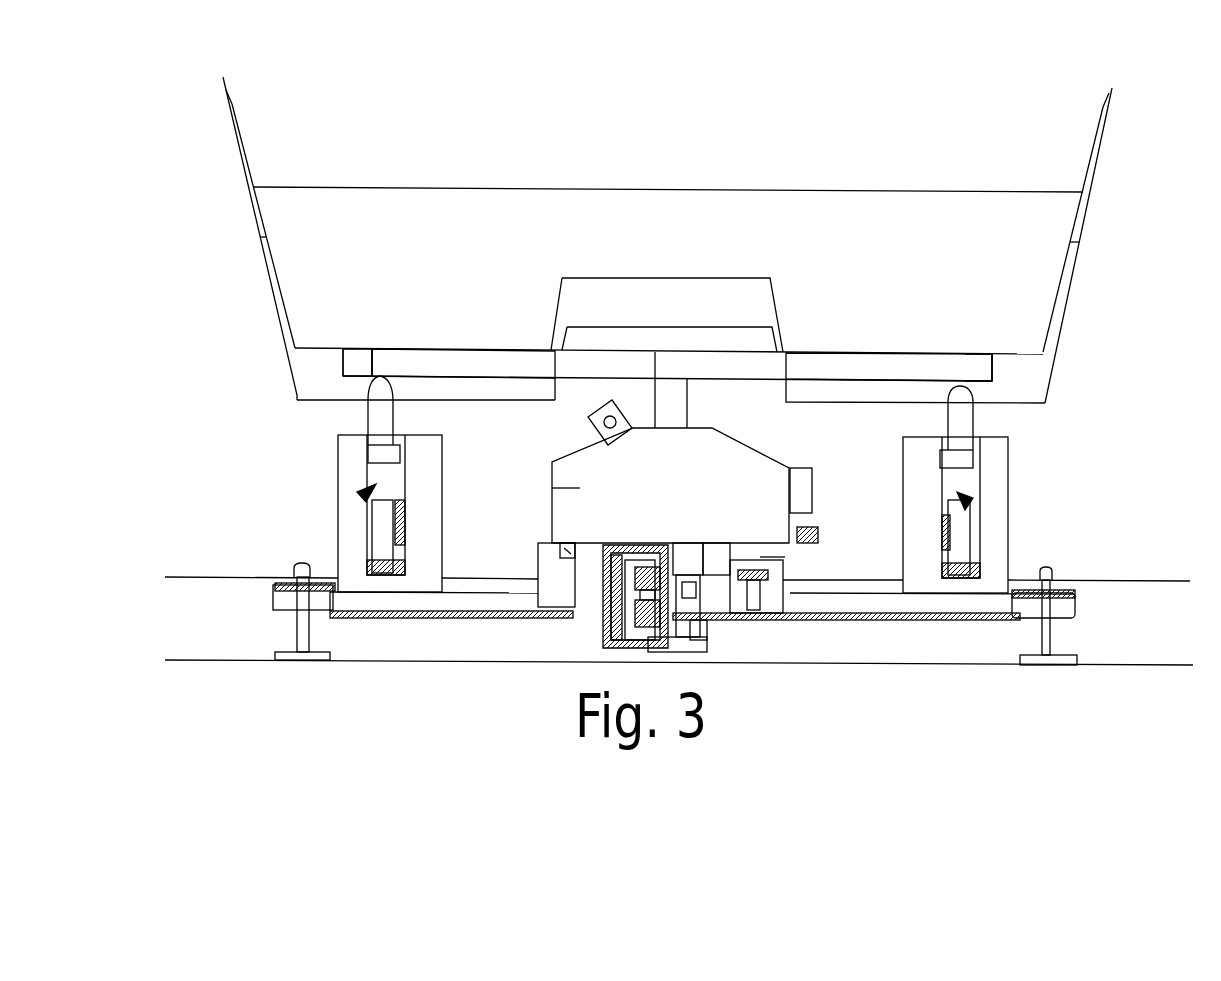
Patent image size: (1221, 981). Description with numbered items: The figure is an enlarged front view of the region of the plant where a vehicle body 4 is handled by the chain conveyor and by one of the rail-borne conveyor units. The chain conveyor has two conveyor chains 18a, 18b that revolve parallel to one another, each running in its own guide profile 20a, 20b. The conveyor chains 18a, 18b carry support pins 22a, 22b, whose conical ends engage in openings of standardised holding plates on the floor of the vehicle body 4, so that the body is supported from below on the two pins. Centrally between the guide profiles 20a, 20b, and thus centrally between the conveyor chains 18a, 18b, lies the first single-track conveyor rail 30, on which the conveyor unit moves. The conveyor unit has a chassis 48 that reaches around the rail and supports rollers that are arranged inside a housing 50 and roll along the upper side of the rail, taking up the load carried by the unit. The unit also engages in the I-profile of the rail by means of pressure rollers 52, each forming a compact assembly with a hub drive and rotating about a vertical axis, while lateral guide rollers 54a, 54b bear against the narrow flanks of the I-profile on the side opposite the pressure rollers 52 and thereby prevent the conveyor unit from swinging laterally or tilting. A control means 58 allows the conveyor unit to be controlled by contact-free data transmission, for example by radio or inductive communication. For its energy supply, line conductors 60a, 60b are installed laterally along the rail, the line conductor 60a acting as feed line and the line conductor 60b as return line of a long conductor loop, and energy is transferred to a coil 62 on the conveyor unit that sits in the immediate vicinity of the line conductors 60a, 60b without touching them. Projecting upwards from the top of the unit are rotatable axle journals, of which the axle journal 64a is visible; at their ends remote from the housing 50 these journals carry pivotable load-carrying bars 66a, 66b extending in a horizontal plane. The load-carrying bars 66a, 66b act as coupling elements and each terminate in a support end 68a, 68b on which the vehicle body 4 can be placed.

The vehicle body 4 is at (1017, 228).
The conveyor chain 18a is at (360, 497).
The conveyor chain 18b is at (977, 523).
The guide profile 20a is at (352, 473).
The guide profile 20b is at (995, 493).
The support pin 22a is at (373, 407).
The support pin 22b is at (965, 430).
The first single-track conveyor rail 30 is at (672, 640).
The chassis 48 is at (740, 632).
The housing 50 is at (712, 452).
The pressure roller 52 is at (712, 542).
The lateral guide roller 54a is at (628, 542).
The lateral guide roller 54b is at (633, 652).
The control means 58 is at (552, 570).
The line conductor 60a is at (600, 595).
The line conductor 60b is at (600, 640).
The coil 62 is at (603, 620).
The axle journal 64a is at (670, 408).
The load-carrying bar 66a is at (482, 370).
The load-carrying bar 66b is at (808, 370).
The support end 68a is at (355, 367).
The support end 68b is at (965, 368).